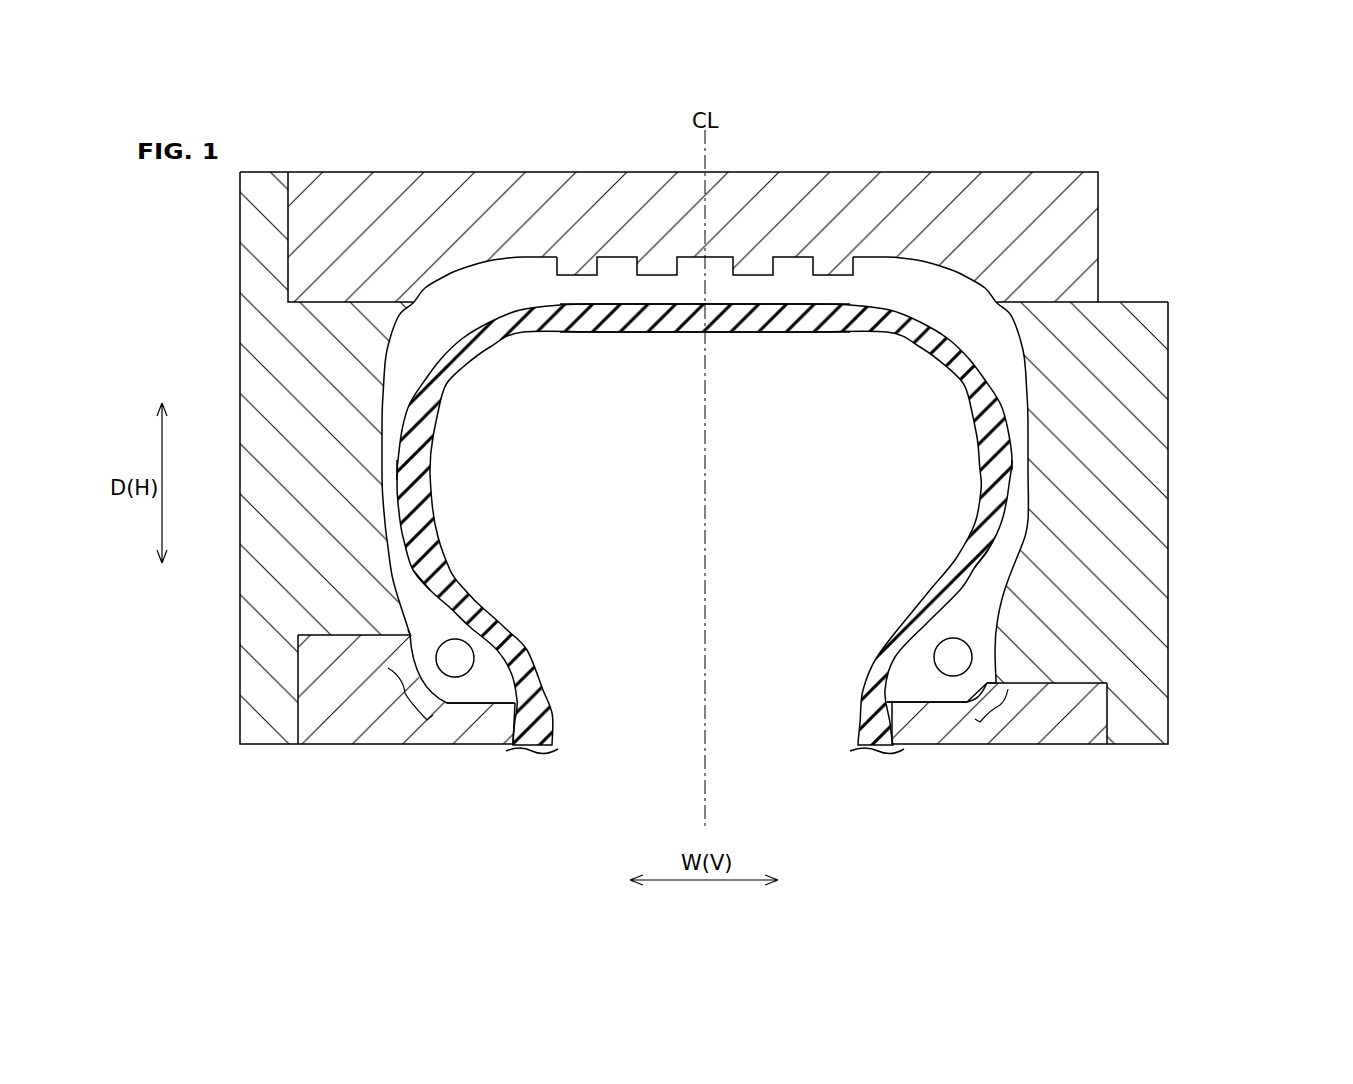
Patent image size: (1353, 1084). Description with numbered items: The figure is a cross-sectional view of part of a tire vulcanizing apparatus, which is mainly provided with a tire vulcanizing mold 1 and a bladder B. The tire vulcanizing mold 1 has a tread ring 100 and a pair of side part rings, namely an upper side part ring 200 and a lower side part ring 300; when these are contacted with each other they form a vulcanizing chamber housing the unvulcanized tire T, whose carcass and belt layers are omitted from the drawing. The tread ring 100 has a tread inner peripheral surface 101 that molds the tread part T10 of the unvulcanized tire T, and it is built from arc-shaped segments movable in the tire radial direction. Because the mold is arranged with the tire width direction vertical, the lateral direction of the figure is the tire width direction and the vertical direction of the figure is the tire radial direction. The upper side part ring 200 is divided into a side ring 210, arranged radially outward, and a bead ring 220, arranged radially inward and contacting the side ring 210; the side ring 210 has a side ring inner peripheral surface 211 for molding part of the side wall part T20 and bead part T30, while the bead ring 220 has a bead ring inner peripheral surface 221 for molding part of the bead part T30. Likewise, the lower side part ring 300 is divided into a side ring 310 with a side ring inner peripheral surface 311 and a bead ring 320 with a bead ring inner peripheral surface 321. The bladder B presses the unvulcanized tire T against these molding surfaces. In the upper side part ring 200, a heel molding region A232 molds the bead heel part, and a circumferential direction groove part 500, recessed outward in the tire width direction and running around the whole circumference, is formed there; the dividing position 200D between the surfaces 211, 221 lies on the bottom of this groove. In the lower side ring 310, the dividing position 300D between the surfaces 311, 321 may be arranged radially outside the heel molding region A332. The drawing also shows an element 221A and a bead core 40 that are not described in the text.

The tire vulcanizing mold 1 is at (1120, 147).
The tread ring 100 is at (704, 211).
The tread inner peripheral surface 101 is at (612, 272).
The lower side part ring 300 is at (330, 497).
The side ring 310 is at (360, 458).
The side ring inner peripheral surface 311 is at (391, 478).
The bead ring 320 is at (339, 700).
The dividing position 300D is at (406, 620).
The bead ring upper surface 221A is at (310, 634).
The bead ring inner peripheral surface 321 is at (483, 707).
The heel molding region A332 is at (390, 699).
The upper side part ring 200 is at (1080, 540).
The side ring 210 is at (1050, 500).
The side ring inner peripheral surface 211 is at (1020, 484).
The bead ring 220 is at (1067, 753).
The bead ring inner peripheral surface 221 is at (924, 708).
The dividing position 200D is at (1058, 641).
The circumferential direction groove part 500 is at (990, 665).
The heel molding region A232 is at (1018, 709).
The bead core 40 is at (465, 656).
The unvulcanized tire T is at (543, 295).
The tread part T10 is at (667, 286).
The side wall part T20 is at (395, 406).
The bead part T30 is at (440, 604).
The bladder B is at (548, 724).